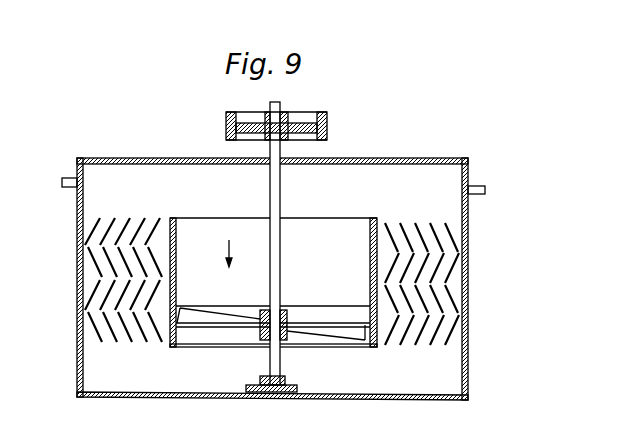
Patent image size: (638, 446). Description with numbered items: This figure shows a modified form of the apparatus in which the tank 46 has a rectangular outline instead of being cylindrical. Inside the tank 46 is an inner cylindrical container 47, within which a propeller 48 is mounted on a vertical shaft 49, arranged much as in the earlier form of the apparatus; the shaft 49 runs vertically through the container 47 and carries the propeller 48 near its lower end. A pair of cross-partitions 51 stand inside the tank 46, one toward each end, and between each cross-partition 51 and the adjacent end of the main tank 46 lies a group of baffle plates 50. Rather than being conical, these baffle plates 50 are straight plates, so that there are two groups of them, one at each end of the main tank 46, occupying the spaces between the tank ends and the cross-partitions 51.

The tank 46 is at (467, 356).
The inner cylindrical container 47 is at (368, 244).
The propeller 48 is at (350, 338).
The vertical shaft 49 is at (281, 210).
The baffle plates 50 is at (453, 299).
The cross-partitions 51 is at (172, 218).